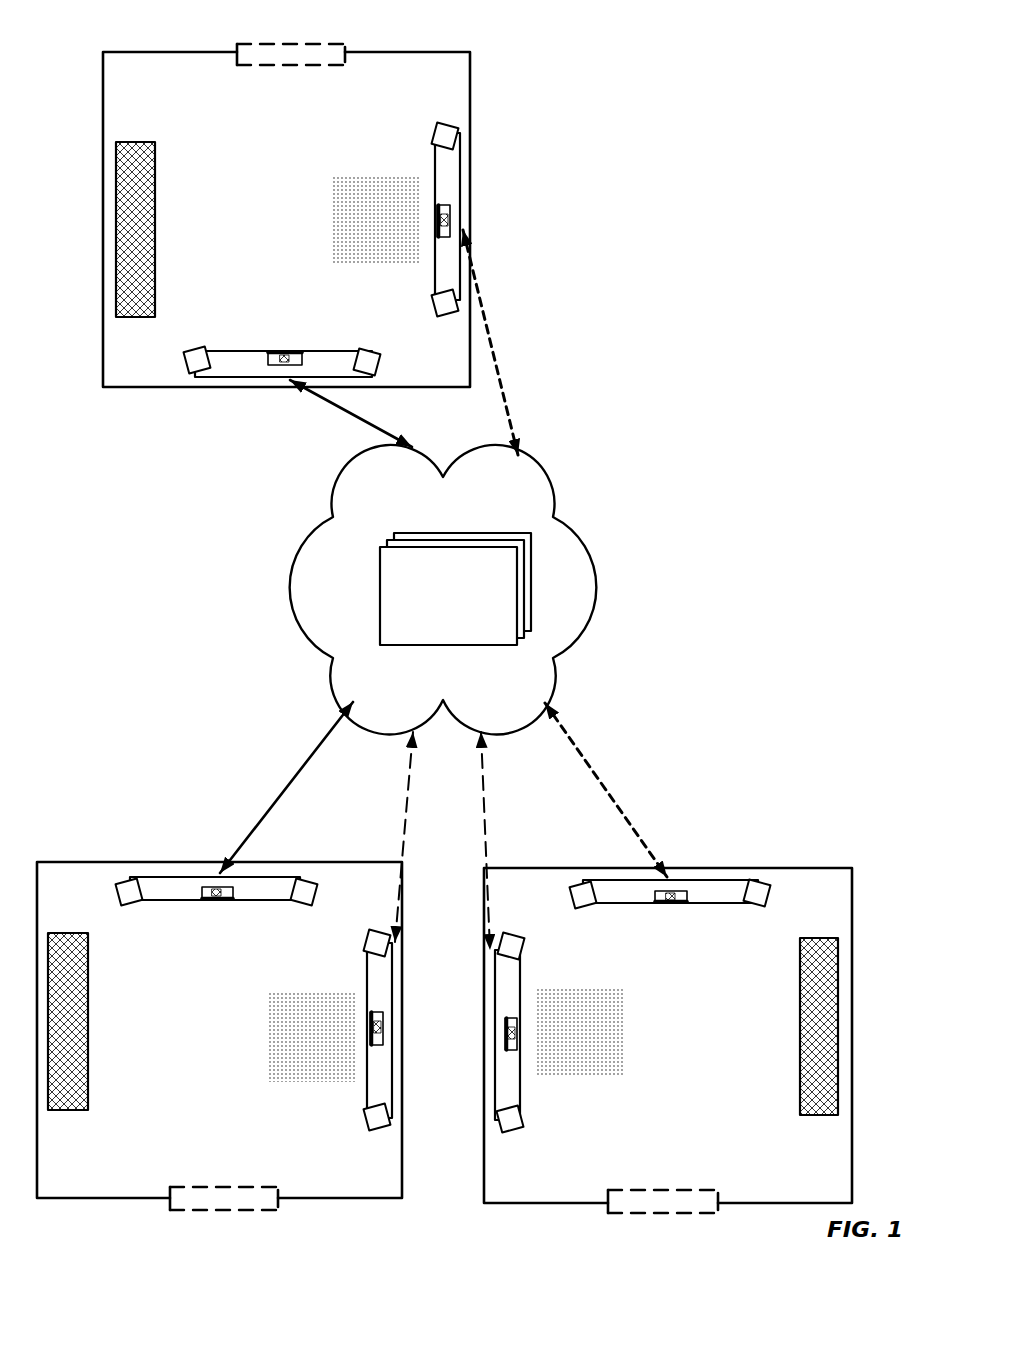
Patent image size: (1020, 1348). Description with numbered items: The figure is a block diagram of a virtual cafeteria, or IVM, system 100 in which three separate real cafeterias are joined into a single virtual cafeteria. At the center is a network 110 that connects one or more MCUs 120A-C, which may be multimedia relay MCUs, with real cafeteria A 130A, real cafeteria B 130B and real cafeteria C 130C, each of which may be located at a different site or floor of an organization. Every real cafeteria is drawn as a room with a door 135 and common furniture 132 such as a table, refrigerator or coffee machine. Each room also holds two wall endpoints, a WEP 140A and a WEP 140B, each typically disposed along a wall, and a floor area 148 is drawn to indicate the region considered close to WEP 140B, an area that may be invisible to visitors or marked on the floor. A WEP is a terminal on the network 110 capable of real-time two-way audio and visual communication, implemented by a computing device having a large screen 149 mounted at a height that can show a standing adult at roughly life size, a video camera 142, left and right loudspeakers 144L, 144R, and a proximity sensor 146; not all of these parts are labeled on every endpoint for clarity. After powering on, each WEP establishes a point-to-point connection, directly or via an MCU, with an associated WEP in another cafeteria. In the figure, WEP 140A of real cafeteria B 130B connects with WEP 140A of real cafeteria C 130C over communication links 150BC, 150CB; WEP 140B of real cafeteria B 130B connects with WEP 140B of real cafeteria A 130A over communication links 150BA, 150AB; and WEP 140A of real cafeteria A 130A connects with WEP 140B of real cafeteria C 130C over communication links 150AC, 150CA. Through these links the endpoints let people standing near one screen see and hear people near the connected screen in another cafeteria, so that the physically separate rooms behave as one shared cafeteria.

The IVM system 100 is at (754, 121).
The network 110 is at (469, 589).
The MCUs 120A-C is at (455, 573).
The real cafeteria A 130A is at (668, 1074).
The real cafeteria B 130B is at (240, 1059).
The real cafeteria C 130C is at (345, 215).
The common furniture 132 is at (443, 628).
The door 135 is at (444, 627).
The WEP (first wall endpoint) 140A is at (476, 627).
The WEP (second wall endpoint) 140B is at (442, 626).
The video camera 142 is at (444, 627).
The left loudspeaker 144L is at (495, 627).
The right loudspeaker 144R is at (444, 628).
The proximity sensor 146 is at (441, 630).
The floor area 148 is at (452, 646).
The large screen 149 is at (567, 719).
The communication link 150AB is at (524, 841).
The communication link 150AC is at (607, 790).
The communication link 150BA is at (365, 837).
The communication link 150BC is at (285, 787).
The communication link 150CA is at (520, 342).
The communication link 150CB is at (345, 416).